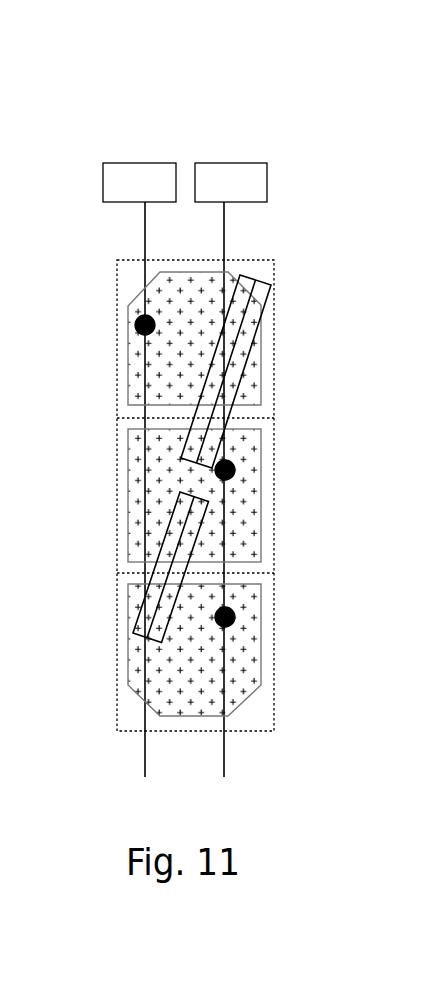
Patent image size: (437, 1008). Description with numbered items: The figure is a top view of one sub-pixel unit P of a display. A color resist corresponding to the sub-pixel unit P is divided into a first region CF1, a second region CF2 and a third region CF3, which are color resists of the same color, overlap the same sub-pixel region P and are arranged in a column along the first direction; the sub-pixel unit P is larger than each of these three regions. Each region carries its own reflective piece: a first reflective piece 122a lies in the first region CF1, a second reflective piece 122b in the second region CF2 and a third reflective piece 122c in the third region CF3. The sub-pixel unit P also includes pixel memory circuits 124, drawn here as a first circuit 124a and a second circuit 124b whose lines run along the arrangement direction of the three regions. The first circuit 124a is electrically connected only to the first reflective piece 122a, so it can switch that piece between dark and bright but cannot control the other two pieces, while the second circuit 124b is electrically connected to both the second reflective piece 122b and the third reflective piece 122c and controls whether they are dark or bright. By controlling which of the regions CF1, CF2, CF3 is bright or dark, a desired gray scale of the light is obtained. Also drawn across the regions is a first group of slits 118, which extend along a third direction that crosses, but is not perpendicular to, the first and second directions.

The pixel memory circuits 124 is at (113, 42).
The first circuit 124a is at (139, 470).
The second circuit 124b is at (231, 470).
The sub-pixel unit P is at (117, 260).
The first region CF1 is at (264, 272).
The second region CF2 is at (270, 470).
The third region CF3 is at (268, 649).
The first reflective piece 122a is at (135, 345).
The second reflective piece 122b is at (135, 500).
The third reflective piece 122c is at (135, 655).
The first group of slits 118 is at (252, 346).